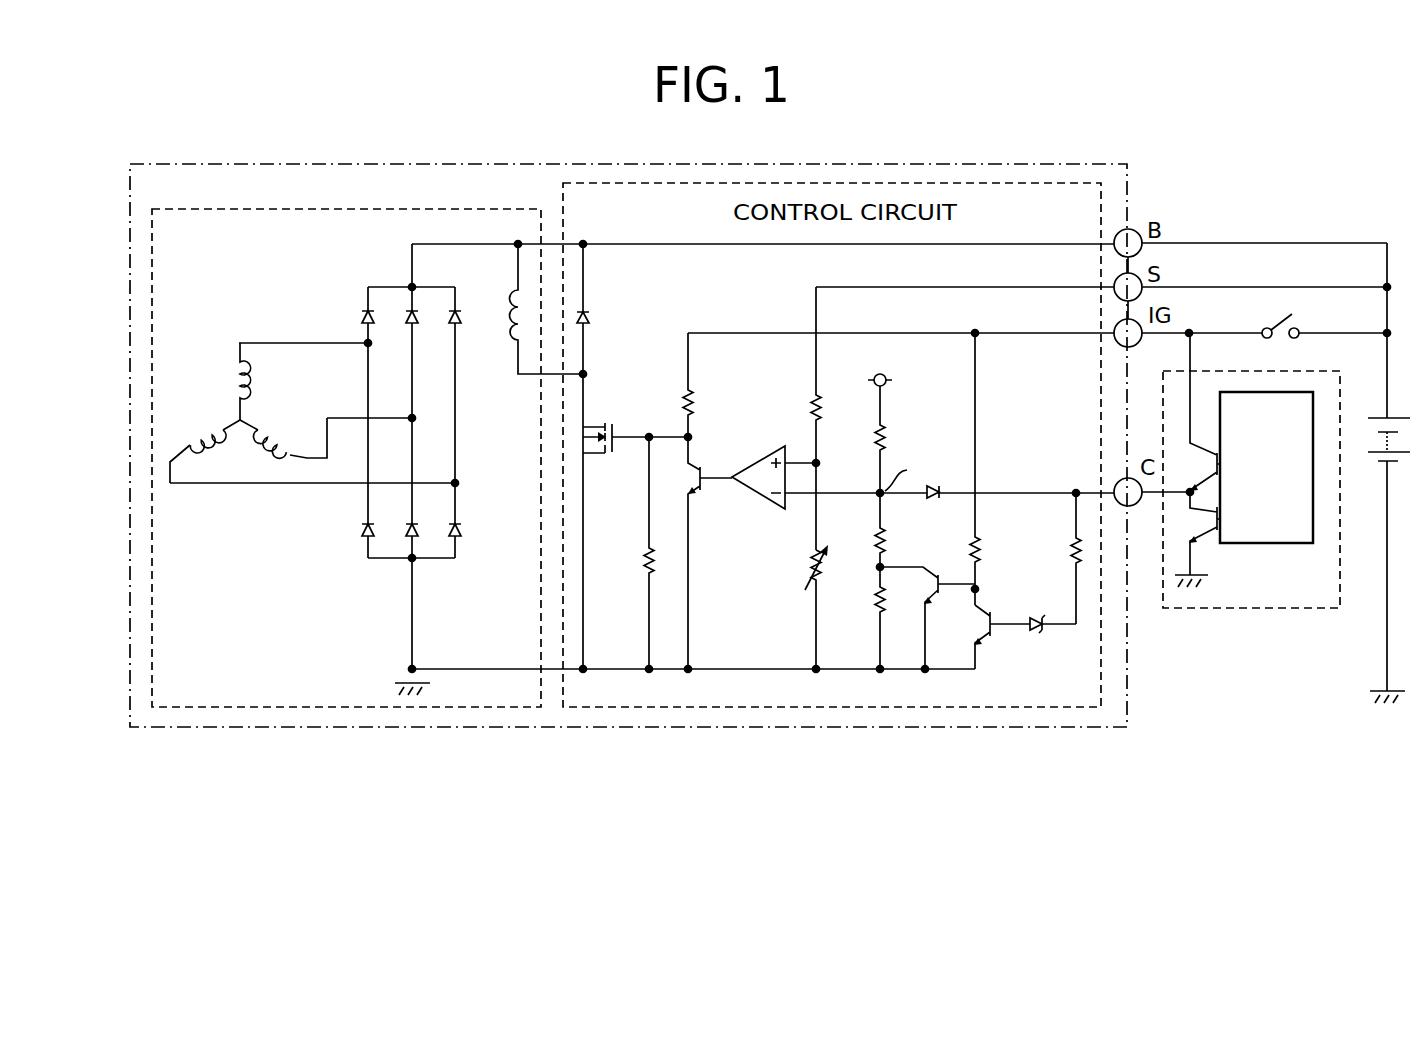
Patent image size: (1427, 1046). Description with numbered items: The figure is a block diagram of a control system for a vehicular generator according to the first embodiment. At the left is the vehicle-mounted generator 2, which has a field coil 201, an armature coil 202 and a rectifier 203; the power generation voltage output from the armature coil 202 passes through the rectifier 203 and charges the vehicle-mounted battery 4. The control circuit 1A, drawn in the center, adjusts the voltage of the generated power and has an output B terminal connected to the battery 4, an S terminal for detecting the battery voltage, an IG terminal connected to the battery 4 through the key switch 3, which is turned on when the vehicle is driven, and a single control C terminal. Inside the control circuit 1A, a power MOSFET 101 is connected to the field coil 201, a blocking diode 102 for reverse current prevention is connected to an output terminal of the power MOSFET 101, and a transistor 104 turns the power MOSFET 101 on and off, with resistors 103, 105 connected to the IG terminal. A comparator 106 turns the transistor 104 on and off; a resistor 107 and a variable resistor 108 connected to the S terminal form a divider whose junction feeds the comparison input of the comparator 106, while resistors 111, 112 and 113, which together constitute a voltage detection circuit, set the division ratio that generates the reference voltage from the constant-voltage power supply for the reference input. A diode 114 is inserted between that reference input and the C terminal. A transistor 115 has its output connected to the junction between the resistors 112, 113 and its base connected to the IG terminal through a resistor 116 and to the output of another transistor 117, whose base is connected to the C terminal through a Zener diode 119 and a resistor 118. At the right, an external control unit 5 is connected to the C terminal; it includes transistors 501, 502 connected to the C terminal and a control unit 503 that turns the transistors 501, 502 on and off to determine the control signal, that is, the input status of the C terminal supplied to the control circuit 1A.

The control circuit 1A is at (1105, 204).
The vehicle-mounted generator 2 is at (198, 209).
The field coil 201 is at (500, 308).
The armature coil 202 is at (220, 405).
The rectifier 203 is at (360, 318).
The key switch 3 is at (1290, 318).
The vehicle-mounted battery 4 is at (1380, 418).
The external control unit 5 is at (1248, 609).
The power MOSFET 101 is at (608, 424).
The blocking diode 102 is at (600, 318).
The resistor 103 is at (628, 553).
The transistor 104 is at (694, 493).
The resistor 105 is at (702, 412).
The comparator 106 is at (752, 466).
The resistor 107 is at (840, 418).
The variable resistor 108 is at (798, 609).
The resistor 111 is at (892, 440).
The resistor 112 is at (860, 532).
The resistor 113 is at (859, 620).
The diode 114 is at (950, 490).
The transistor 115 is at (937, 596).
The resistor 116 is at (954, 468).
The transistor 117 is at (990, 636).
The resistor 118 is at (1053, 558).
The Zener diode 119 is at (1052, 614).
The transistor 501 is at (1198, 447).
The transistor 502 is at (1221, 545).
The control unit 503 is at (1272, 544).